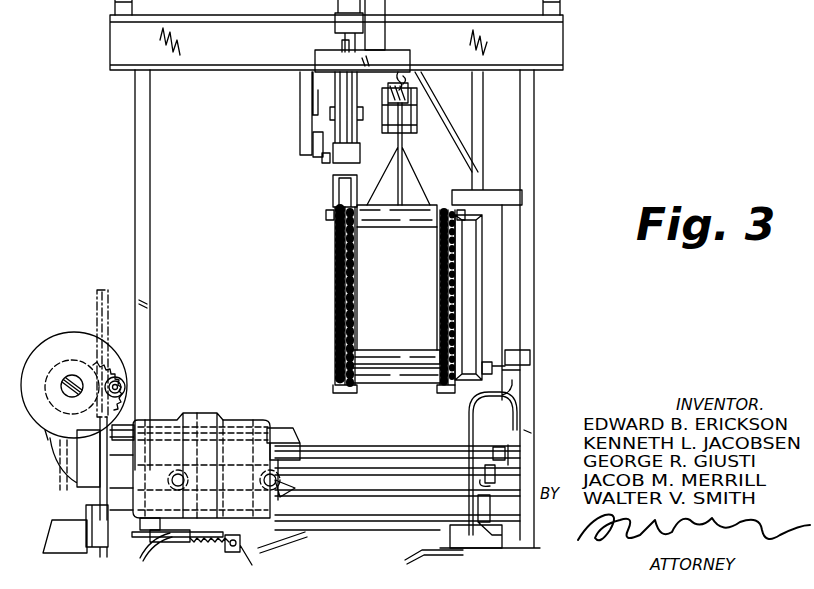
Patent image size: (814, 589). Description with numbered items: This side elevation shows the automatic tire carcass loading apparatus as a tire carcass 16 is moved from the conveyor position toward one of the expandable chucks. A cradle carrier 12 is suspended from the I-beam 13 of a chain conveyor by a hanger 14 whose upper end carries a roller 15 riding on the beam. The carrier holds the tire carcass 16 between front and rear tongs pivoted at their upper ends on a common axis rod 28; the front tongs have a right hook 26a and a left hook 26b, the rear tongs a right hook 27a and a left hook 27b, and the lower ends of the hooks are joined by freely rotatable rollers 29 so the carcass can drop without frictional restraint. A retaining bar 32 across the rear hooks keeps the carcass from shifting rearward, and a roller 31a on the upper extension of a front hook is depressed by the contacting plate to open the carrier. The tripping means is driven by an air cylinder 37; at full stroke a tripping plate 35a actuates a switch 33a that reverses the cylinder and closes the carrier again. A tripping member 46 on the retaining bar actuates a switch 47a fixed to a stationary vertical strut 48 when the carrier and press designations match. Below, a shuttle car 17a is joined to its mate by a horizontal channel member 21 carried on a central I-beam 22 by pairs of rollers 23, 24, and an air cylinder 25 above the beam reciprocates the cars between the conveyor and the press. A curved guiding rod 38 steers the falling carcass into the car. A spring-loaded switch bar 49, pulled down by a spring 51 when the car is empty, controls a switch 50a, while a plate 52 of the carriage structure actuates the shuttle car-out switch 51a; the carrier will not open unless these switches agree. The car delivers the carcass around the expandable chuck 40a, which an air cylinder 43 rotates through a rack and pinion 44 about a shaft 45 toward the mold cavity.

The cradle carrier 12 is at (321, 316).
The I-beam 13 is at (404, 78).
The hanger 14 is at (399, 180).
The roller 15 is at (408, 94).
The tire carcass 16 is at (200, 418).
The shuttle car 17a is at (152, 534).
The horizontal channel member 21 is at (195, 538).
The central I-beam 22 is at (378, 488).
The roller 23 is at (178, 470).
The roller 24 is at (262, 468).
The air cylinder 25 is at (340, 452).
The right front hook 26a is at (344, 261).
The left front hook 26b is at (340, 280).
The right rear hook 27a is at (450, 287).
The left rear hook 27b is at (440, 310).
The common axis rod 28 is at (405, 213).
The freely rotatable roller 29 is at (400, 366).
The roller 31a is at (337, 182).
The retaining bar 32 is at (477, 243).
The switch 33a is at (312, 144).
The tripping plate 35a is at (331, 135).
The air cylinder 37 is at (343, 42).
The curved guiding rod 38 is at (468, 404).
The expandable chuck 40a is at (272, 430).
The air cylinder 43 is at (88, 522).
The rack and pinion 44 is at (97, 380).
The shaft 45 is at (72, 375).
The tripping member 46 is at (485, 362).
The switch 47a is at (531, 356).
The stationary vertical strut 48 is at (503, 262).
The switch bar 49 is at (292, 537).
The switch 50a is at (478, 500).
The spring 51 is at (242, 546).
The shuttle car-out switch 51a is at (487, 465).
The plate 52 is at (292, 490).